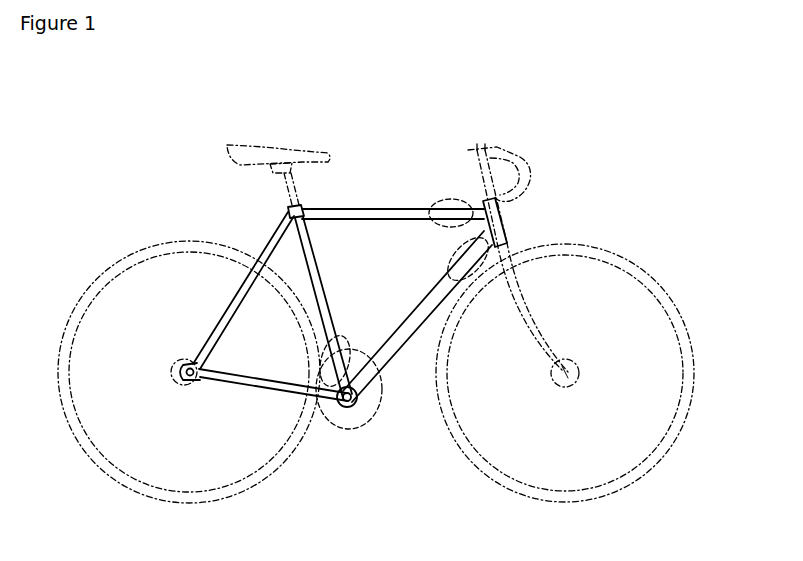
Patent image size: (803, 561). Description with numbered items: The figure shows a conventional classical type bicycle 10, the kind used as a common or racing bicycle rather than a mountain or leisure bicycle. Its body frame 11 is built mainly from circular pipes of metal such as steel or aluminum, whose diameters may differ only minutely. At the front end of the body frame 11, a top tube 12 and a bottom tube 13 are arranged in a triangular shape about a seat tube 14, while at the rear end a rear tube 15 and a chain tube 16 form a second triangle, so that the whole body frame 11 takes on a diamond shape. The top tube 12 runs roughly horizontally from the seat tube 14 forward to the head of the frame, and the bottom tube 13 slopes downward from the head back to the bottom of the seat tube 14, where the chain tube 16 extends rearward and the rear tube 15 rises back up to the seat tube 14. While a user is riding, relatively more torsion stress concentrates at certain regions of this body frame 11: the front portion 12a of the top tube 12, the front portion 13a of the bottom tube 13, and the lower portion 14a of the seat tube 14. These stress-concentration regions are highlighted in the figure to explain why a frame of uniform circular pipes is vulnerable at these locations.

The classical type bicycle 10 is at (591, 152).
The body frame 11 is at (394, 200).
The top tube 12 is at (355, 213).
The front portion of the top tube 12a is at (449, 200).
The bottom tube 13 is at (405, 334).
The front portion of the bottom tube 13a is at (492, 262).
The seat tube 14 is at (297, 252).
The lower portion of the seat tube 14a is at (350, 344).
The rear tube 15 is at (237, 292).
The chain tube 16 is at (294, 388).